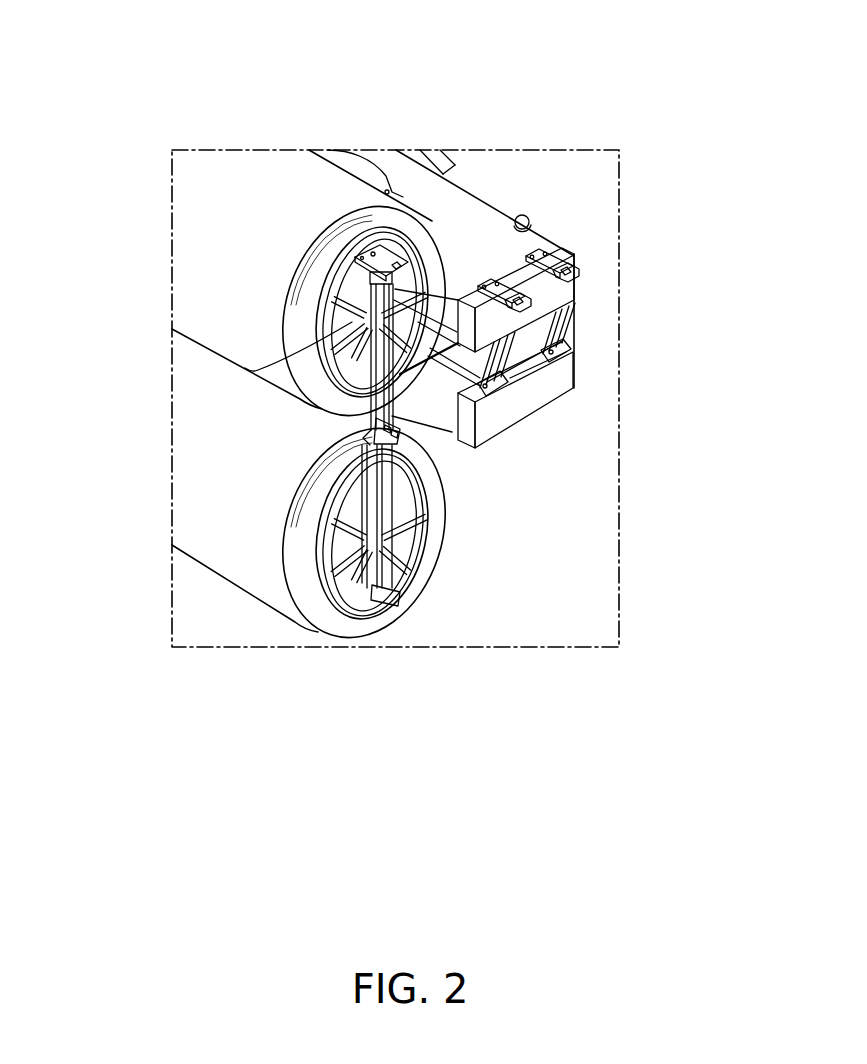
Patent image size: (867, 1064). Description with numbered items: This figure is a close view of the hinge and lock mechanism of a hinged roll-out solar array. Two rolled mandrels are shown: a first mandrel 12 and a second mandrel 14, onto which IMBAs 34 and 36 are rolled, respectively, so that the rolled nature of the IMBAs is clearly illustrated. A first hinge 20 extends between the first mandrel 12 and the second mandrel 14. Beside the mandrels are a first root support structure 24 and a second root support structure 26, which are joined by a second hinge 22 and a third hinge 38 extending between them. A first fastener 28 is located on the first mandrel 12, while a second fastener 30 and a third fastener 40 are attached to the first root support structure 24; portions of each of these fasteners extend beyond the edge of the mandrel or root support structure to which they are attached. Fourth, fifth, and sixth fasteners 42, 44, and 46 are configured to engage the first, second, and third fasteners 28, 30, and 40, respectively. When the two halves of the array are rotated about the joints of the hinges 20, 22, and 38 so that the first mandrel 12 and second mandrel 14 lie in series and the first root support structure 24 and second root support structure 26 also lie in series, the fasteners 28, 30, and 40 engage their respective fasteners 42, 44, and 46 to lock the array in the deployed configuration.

The first mandrel 12 is at (445, 200).
The second mandrel 14 is at (340, 592).
The first hinge 20 is at (387, 574).
The second hinge 22 is at (558, 366).
The first root support structure 24 is at (510, 240).
The second root support structure 26 is at (557, 412).
The first fastener 28 is at (354, 262).
The second fastener 30 is at (556, 293).
The IMBA 34 is at (294, 187).
The IMBA 36 is at (237, 484).
The third hinge 38 is at (578, 328).
The third fastener 40 is at (573, 257).
The fourth fastener 42 is at (387, 603).
The fifth fastener 44 is at (497, 440).
The sixth fastener 46 is at (552, 403).